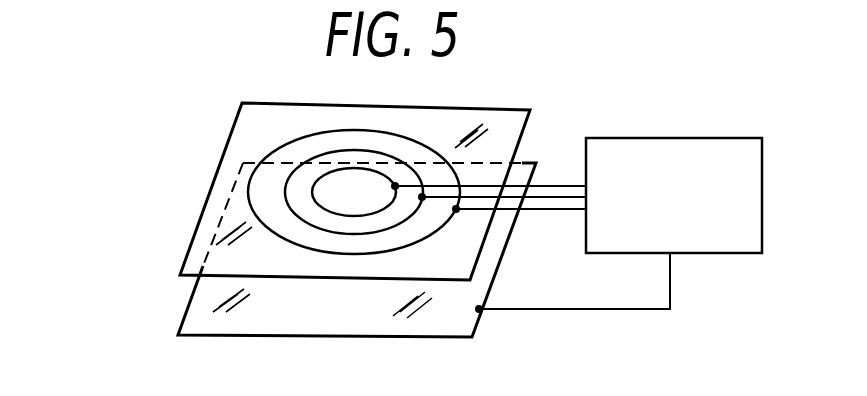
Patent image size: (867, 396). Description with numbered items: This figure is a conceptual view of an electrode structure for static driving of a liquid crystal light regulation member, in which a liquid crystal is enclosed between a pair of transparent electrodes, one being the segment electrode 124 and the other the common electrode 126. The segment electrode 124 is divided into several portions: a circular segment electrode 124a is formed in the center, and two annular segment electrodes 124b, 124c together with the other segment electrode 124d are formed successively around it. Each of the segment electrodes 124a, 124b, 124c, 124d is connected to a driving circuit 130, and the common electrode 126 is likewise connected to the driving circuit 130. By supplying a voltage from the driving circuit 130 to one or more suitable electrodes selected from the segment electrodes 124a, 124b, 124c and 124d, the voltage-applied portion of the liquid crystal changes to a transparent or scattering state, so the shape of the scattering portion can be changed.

The segment electrode 124 is at (160, 97).
The circular segment electrode 124a is at (327, 180).
The annular segment electrode 124b is at (292, 187).
The annular segment electrode 124c is at (258, 214).
The other segment electrode 124d is at (202, 263).
The common electrode 126 is at (184, 318).
The driving circuit 130 is at (687, 138).